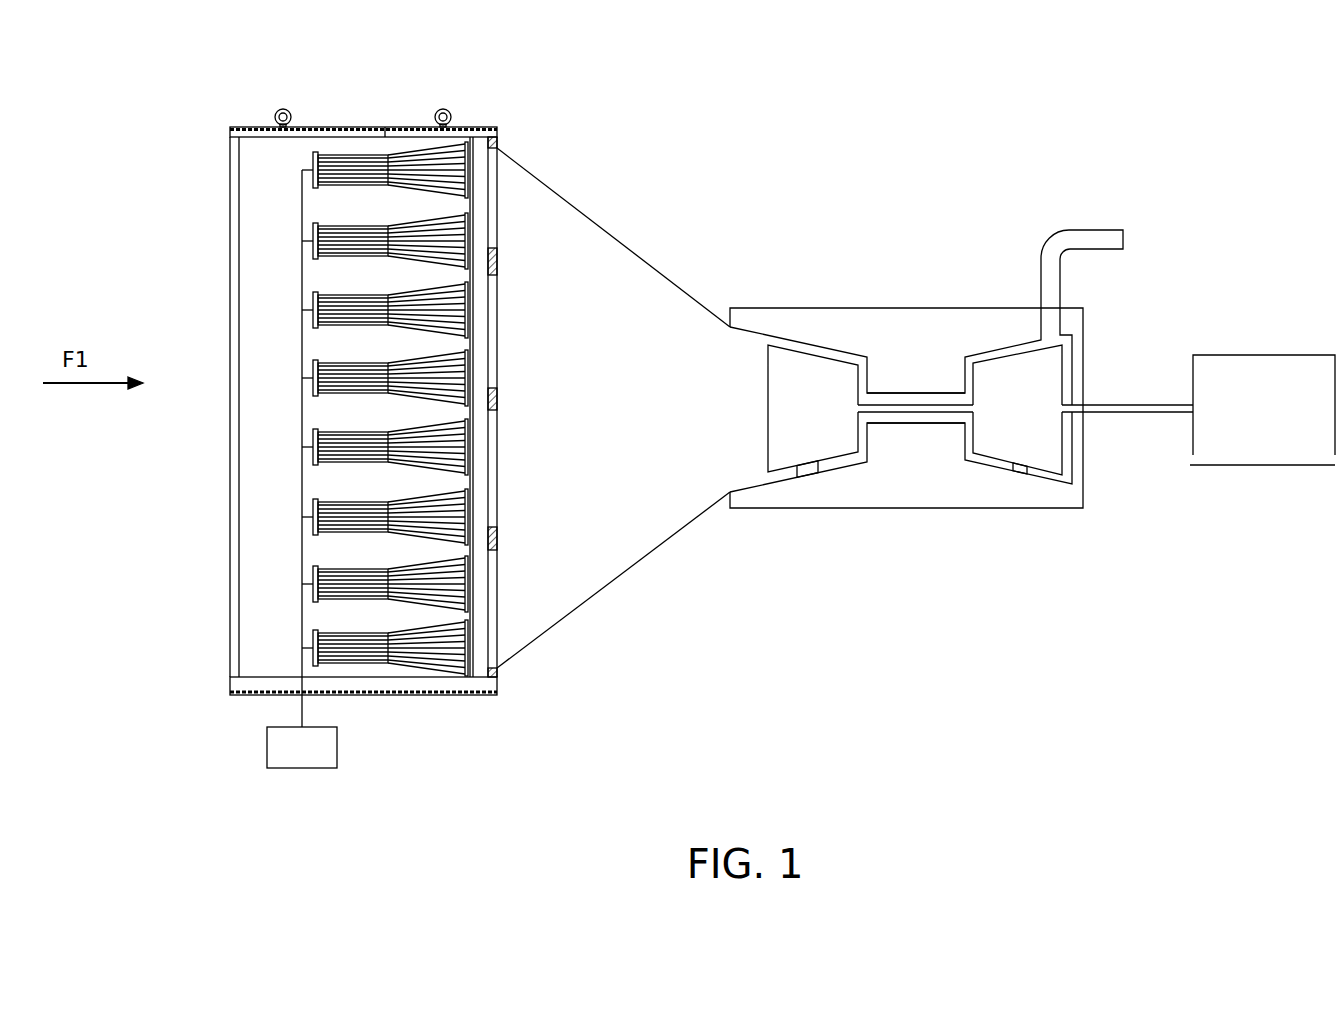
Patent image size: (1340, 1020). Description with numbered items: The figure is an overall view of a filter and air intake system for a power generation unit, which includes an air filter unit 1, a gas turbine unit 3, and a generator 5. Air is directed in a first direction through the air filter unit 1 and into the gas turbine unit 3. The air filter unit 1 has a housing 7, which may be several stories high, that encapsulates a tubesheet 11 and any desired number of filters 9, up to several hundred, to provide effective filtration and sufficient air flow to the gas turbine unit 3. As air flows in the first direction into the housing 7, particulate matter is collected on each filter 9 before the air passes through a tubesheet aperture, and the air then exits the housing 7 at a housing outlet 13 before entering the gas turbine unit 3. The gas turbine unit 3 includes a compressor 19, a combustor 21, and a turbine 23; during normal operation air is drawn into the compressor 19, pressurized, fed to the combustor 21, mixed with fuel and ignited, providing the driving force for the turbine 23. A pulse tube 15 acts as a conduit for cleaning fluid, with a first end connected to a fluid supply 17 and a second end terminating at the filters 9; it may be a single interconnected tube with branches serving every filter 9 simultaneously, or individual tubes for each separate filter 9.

The air filter unit 1 is at (530, 173).
The gas turbine unit 3 is at (885, 308).
The generator 5 is at (1258, 355).
The housing 7 is at (315, 127).
The filter 9 is at (413, 148).
The tubesheet 11 is at (478, 137).
The housing outlet 13 is at (497, 220).
The pulse tube 15 is at (302, 203).
The fluid supply 17 is at (337, 745).
The compressor 19 is at (797, 468).
The combustor 21 is at (915, 425).
The turbine 23 is at (1027, 472).